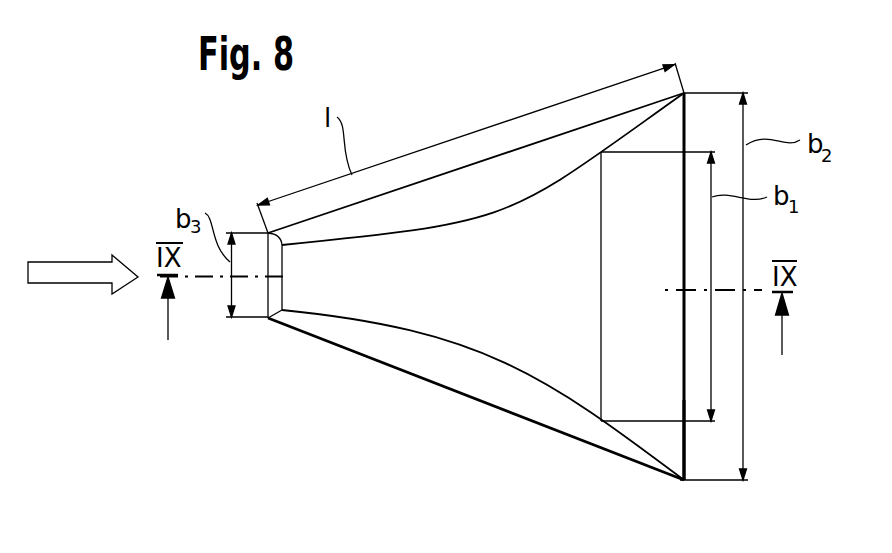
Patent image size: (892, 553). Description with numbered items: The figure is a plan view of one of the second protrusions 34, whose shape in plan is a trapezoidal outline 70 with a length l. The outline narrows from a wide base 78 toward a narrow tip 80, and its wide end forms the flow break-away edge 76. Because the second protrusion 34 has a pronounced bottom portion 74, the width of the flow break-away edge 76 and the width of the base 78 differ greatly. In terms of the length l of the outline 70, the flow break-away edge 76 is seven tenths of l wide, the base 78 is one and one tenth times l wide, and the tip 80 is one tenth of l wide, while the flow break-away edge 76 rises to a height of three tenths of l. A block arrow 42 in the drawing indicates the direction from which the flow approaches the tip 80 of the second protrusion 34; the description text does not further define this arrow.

The second protrusion 34 is at (441, 118).
The flow direction arrow 42 is at (73, 271).
The trapezoidal outline 70 is at (692, 362).
The bottom portion 74 is at (628, 393).
The flow break-away edge 76 is at (612, 252).
The base 78 is at (692, 448).
The tip 80 is at (258, 309).